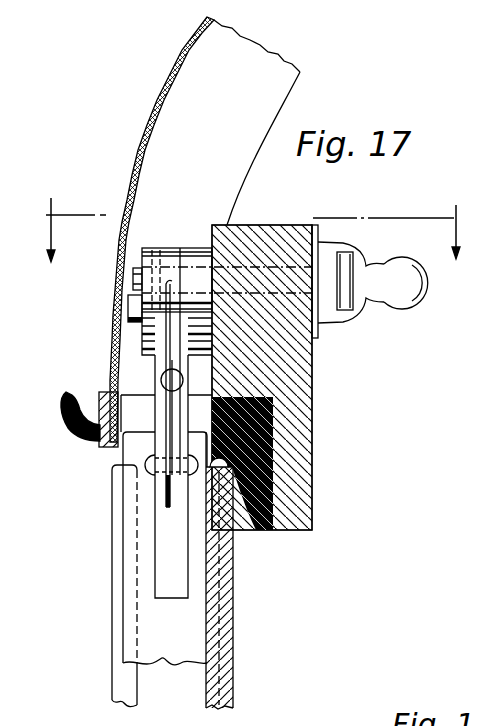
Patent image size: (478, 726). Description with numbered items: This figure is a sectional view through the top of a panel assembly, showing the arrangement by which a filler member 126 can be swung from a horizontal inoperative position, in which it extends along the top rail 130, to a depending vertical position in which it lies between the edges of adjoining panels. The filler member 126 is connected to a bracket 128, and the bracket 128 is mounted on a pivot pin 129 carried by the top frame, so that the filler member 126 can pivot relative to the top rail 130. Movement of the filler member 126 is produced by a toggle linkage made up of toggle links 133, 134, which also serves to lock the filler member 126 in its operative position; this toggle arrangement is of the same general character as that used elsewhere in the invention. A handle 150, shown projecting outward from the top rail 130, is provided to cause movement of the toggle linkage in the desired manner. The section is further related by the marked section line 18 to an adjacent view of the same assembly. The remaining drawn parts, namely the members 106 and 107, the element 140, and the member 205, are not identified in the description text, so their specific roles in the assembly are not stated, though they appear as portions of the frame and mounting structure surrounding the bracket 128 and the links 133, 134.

The section line 18- 18 is at (249, 232).
The housing plate 106 is at (118, 680).
The housing wall 107 is at (233, 603).
The filler member 126 is at (165, 663).
The bracket 128 is at (162, 552).
The pivot pin 129 is at (128, 308).
The top rail 130 is at (302, 435).
The toggle link 133 is at (168, 413).
The toggle link 134 is at (160, 363).
The washer 140 is at (135, 278).
The handle 150 is at (387, 297).
The seal member 205 is at (255, 532).